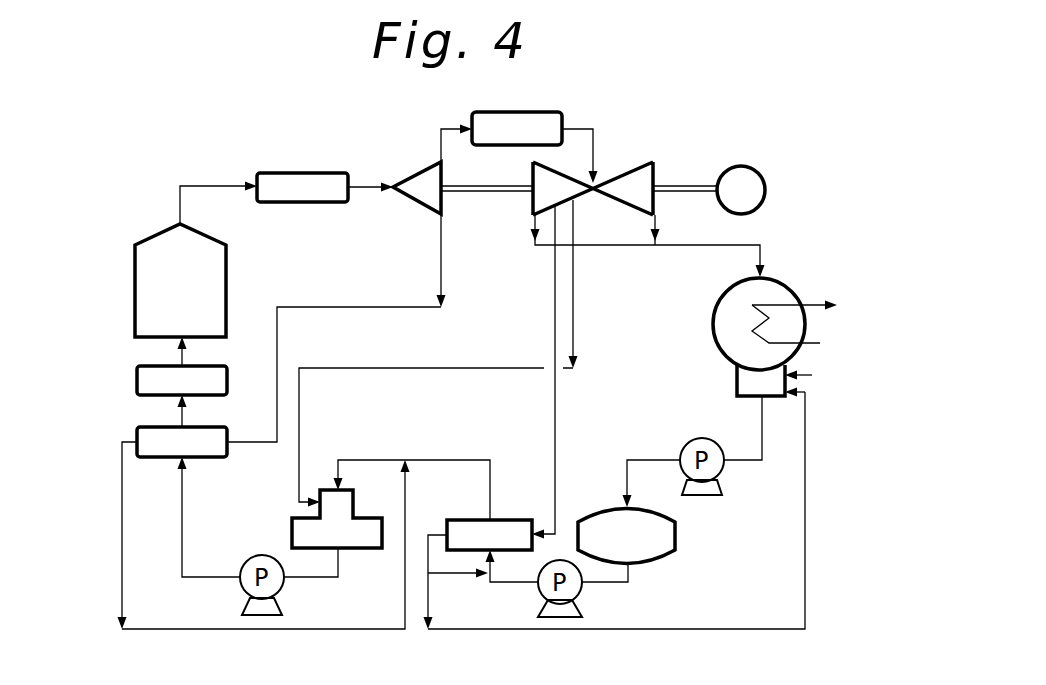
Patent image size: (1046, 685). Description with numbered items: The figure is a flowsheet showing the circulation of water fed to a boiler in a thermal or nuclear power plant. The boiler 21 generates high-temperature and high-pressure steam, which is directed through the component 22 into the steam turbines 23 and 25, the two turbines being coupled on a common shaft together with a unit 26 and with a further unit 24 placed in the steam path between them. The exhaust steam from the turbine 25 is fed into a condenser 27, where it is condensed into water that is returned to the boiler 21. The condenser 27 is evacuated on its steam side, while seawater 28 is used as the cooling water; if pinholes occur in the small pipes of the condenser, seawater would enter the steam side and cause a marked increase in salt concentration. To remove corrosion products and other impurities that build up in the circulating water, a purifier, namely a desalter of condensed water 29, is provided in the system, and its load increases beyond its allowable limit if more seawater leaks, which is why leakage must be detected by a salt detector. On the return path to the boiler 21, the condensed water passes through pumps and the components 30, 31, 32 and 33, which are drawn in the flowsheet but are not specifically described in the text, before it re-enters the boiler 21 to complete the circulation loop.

The boiler 21 is at (227, 263).
The heat exchanger 22 is at (282, 172).
The steam turbine 23 is at (418, 175).
The heater 24 is at (563, 112).
The steam turbine 25 is at (640, 160).
The generator 26 is at (755, 167).
The condenser 27 is at (713, 345).
The seawater 28 is at (805, 298).
The purifier (desalter of condensed water) 29 is at (677, 535).
The heat exchanger 30 is at (512, 520).
The separator 31 is at (292, 533).
The heat exchanger 32 is at (140, 427).
The heat exchanger 33 is at (140, 366).